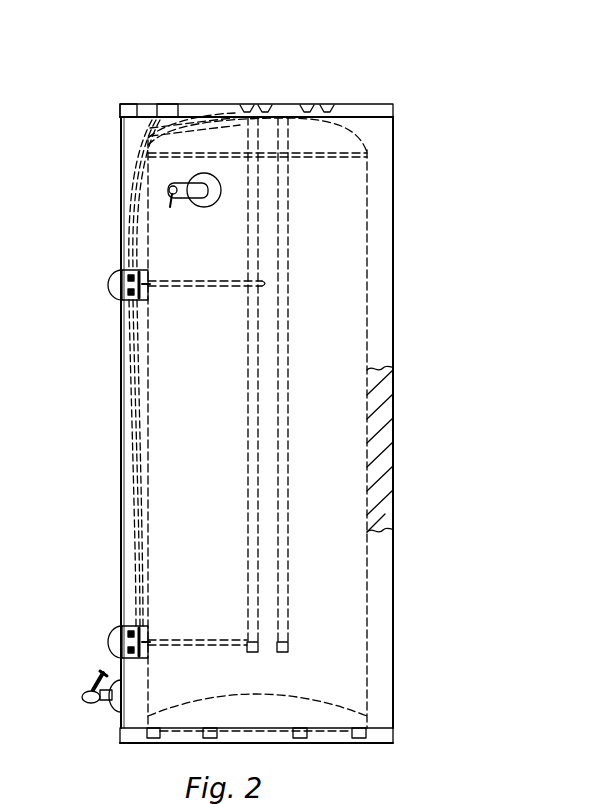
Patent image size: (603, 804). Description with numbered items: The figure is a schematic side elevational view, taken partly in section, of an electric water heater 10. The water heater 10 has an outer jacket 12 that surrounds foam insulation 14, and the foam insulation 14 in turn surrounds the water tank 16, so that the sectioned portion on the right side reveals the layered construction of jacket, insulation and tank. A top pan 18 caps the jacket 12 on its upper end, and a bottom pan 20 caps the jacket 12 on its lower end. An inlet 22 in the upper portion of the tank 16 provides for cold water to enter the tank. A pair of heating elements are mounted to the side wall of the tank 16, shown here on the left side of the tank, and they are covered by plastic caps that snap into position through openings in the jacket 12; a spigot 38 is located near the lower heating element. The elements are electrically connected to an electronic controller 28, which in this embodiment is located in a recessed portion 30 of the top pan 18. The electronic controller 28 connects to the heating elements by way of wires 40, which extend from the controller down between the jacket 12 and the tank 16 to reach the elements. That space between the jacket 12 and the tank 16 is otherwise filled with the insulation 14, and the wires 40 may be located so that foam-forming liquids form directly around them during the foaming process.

The electric water heater 10 is at (436, 350).
The outer jacket 12 is at (122, 510).
The foam insulation 14 is at (380, 450).
The water tank 16 is at (366, 580).
The top pan 18 is at (347, 103).
The bottom pan 20 is at (135, 745).
The inlet 22 is at (260, 140).
The electronic controller 28 is at (163, 125).
The recessed portion 30 is at (145, 112).
The spigot 38 is at (88, 693).
The wires 40 is at (131, 424).